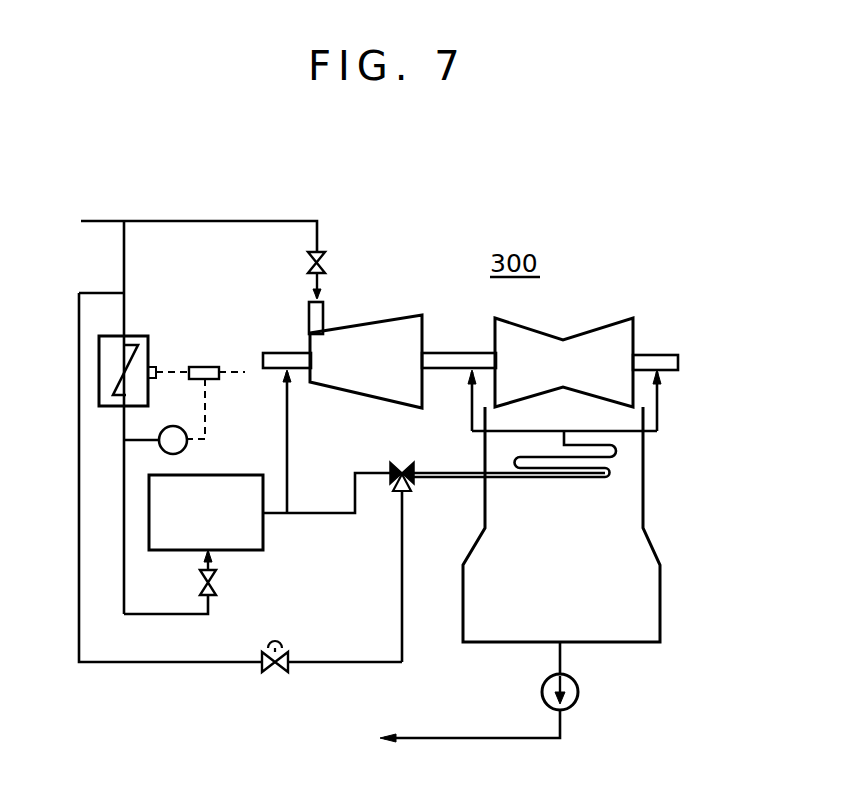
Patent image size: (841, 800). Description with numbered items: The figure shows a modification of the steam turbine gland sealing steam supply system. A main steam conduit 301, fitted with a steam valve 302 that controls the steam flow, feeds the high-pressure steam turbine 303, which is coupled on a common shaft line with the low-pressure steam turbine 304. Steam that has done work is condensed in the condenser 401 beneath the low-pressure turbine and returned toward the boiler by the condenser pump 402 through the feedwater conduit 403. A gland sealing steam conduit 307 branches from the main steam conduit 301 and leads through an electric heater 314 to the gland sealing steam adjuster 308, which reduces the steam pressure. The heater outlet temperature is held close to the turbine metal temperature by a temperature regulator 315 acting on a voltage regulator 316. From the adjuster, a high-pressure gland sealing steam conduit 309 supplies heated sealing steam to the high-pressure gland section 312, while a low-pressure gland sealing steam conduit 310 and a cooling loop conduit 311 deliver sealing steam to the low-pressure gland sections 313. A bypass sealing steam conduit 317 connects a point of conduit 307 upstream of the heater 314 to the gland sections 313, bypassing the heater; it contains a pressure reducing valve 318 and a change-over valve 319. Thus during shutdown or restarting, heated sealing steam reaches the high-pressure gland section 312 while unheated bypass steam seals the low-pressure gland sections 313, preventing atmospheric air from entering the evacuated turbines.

The main steam conduit 301 is at (95, 220).
The steam valve 302 is at (322, 258).
The high-pressure steam turbine 303 is at (352, 325).
The low-pressure steam turbine 304 is at (530, 330).
The gland sealing steam conduit 307 is at (124, 266).
The gland sealing steam adjuster 308 is at (265, 540).
The high-pressure gland sealing steam conduit 309 is at (288, 422).
The low-pressure gland sealing steam conduit 310 is at (355, 496).
The cooling loop conduit 311 is at (558, 480).
The high-pressure gland section 312 is at (284, 353).
The low-pressure gland sections 313 is at (457, 353).
The electric heater 314 is at (138, 336).
The temperature regulator 315 is at (166, 428).
The voltage regulator 316 is at (205, 367).
The bypass sealing steam conduit 317 is at (155, 664).
The pressure reducing valve 318 is at (281, 673).
The change-over valve 319 is at (402, 462).
The condenser 401 is at (631, 644).
The condenser pump 402 is at (575, 704).
The feedwater conduit 403 is at (500, 740).